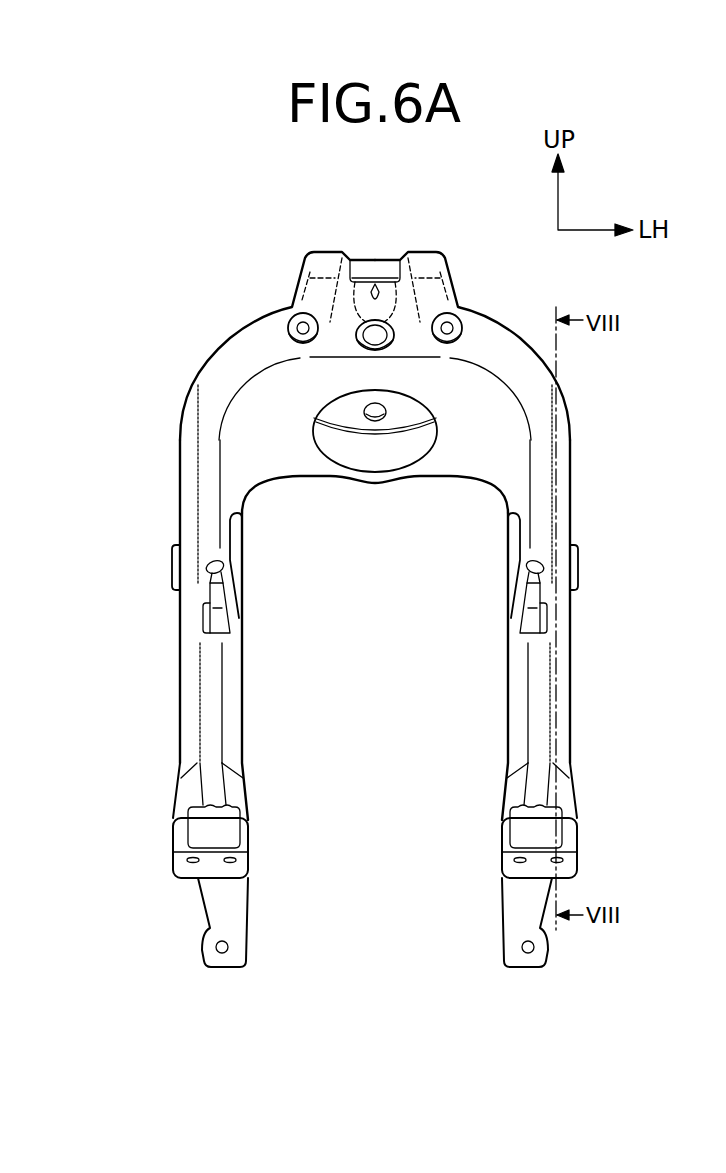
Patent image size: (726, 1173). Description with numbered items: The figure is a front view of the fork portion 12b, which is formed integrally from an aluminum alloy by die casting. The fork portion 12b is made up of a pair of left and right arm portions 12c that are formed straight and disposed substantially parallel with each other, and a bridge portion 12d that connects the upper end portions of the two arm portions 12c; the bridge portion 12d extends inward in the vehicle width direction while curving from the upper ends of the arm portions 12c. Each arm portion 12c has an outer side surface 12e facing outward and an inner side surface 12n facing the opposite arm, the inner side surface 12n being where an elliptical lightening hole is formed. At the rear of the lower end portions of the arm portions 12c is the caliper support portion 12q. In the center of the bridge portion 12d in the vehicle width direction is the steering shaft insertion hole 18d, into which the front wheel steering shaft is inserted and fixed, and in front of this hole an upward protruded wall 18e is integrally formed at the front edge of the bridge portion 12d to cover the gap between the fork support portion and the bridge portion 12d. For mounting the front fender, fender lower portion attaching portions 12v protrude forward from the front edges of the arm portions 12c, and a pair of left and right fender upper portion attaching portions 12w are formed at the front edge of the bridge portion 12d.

The fork portion 12b is at (139, 309).
The arm portion 12c is at (176, 524).
The bridge portion 12d is at (502, 347).
The outer side surface 12e is at (180, 689).
The inner side surface 12n is at (243, 730).
The caliper support portion 12q is at (214, 903).
The fender lower portion attaching portion 12v is at (210, 596).
The fender upper portion attaching portion 12w is at (292, 320).
The steering shaft insertion hole 18d is at (383, 456).
The upward protruded wall 18e is at (373, 258).